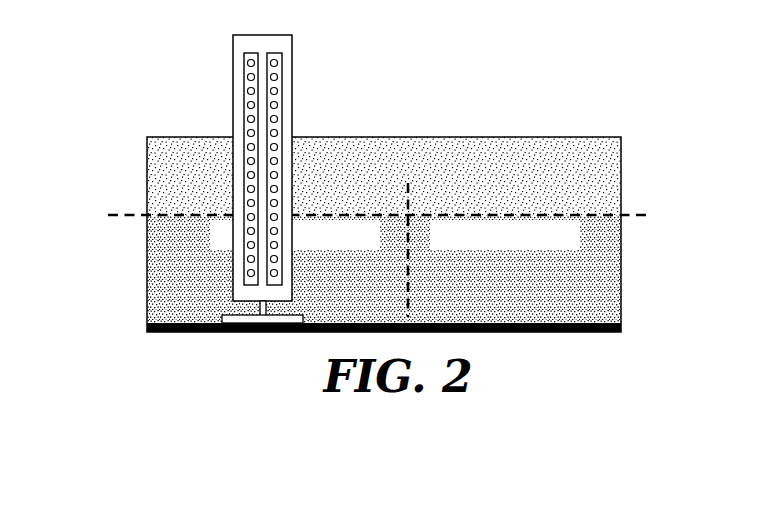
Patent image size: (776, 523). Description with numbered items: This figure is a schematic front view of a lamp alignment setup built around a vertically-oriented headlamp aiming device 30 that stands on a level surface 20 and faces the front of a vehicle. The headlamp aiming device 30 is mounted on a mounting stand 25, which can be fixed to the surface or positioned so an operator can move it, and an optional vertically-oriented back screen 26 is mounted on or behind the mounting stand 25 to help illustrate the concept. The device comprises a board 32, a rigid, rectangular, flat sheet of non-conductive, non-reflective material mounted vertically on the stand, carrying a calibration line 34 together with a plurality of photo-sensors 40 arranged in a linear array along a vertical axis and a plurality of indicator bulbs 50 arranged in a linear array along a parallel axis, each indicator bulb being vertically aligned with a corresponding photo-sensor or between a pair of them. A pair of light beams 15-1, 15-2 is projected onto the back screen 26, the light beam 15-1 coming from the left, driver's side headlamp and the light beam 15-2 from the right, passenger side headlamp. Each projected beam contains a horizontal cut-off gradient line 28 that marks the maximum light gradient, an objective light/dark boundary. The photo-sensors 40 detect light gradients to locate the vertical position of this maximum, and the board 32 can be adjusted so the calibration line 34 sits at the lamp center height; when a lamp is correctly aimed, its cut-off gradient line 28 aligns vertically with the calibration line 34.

The level surface 20 is at (572, 316).
The mounting stand 25 is at (222, 320).
The back screen 26 is at (585, 155).
The cut-off gradient line 28 is at (634, 213).
The headlamp aiming device 30 is at (223, 165).
The board 32 is at (237, 97).
The calibration line 34 is at (238, 215).
The photo-sensors 40 is at (247, 91).
The indicator bulbs 50 is at (278, 91).
The light beam 15-1 is at (350, 238).
The light beam 15-2 is at (508, 238).